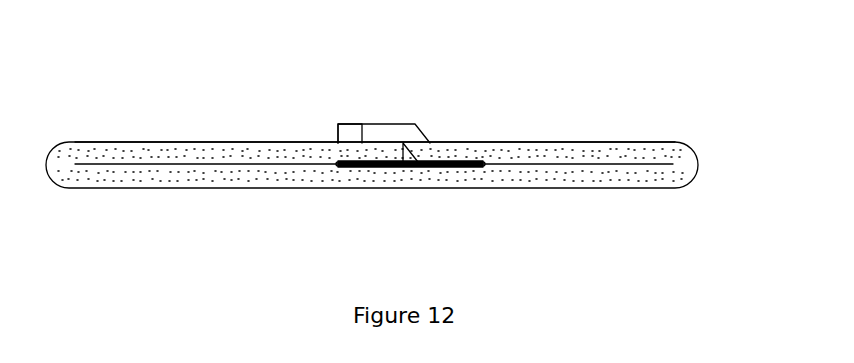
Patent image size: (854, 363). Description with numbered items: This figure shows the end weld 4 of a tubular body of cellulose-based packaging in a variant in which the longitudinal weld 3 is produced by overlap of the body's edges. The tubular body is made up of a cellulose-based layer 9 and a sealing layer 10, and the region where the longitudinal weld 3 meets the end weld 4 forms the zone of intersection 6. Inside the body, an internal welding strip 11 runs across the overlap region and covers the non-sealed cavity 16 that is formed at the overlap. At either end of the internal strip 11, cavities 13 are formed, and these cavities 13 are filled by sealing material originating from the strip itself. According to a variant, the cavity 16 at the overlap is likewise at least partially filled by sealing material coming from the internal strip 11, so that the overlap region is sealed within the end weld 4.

The end weld 4 is at (166, 109).
The longitudinal weld 3 is at (357, 125).
The zone of intersection of the longitudinal weld and of the end weld 6 is at (377, 115).
The cellulose-based layer of the tubular body 9 is at (597, 155).
The sealing layer of the tubular body 10 is at (612, 164).
The internal welding strip 11 is at (378, 167).
The cavities 13 is at (337, 166).
The non-sealed cavity 16 is at (410, 167).